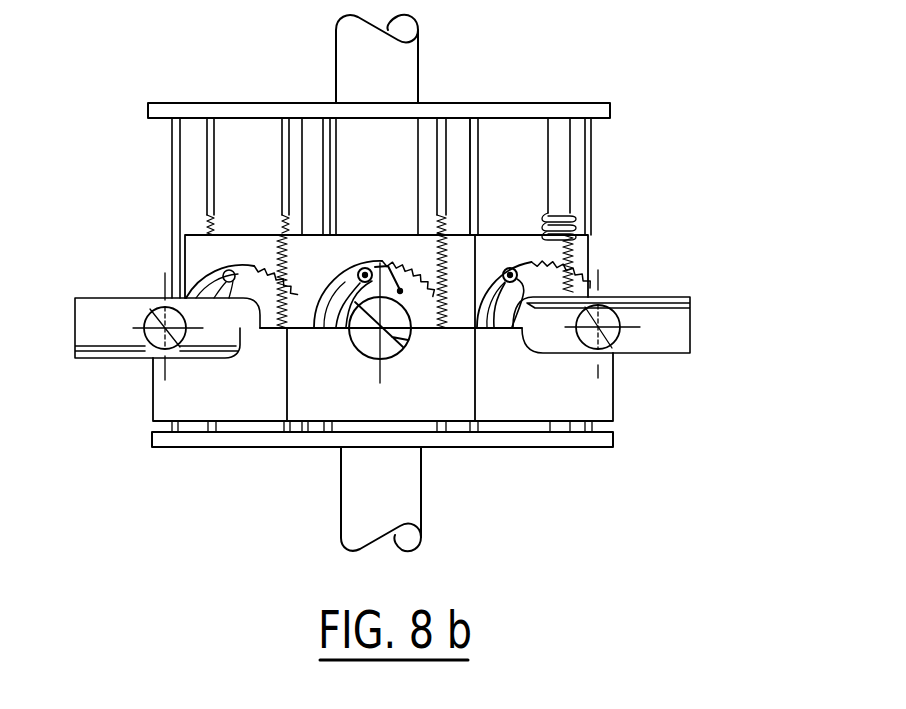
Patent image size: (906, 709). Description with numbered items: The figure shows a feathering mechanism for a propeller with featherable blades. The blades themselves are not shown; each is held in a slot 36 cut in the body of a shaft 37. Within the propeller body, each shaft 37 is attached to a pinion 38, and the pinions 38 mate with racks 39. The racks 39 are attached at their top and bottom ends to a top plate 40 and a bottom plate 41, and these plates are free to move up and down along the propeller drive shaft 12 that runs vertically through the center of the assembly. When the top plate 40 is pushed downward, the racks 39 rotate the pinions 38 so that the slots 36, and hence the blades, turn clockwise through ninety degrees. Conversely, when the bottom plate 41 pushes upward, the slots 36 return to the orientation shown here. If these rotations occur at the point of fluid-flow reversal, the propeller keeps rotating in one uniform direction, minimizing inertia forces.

The propeller drive shaft 12 is at (365, 489).
The slot 36 is at (409, 342).
The shaft 37 is at (678, 297).
The pinion 38 is at (394, 265).
The rack 39 is at (462, 246).
The top plate 40 is at (150, 110).
The bottom plate 41 is at (152, 444).